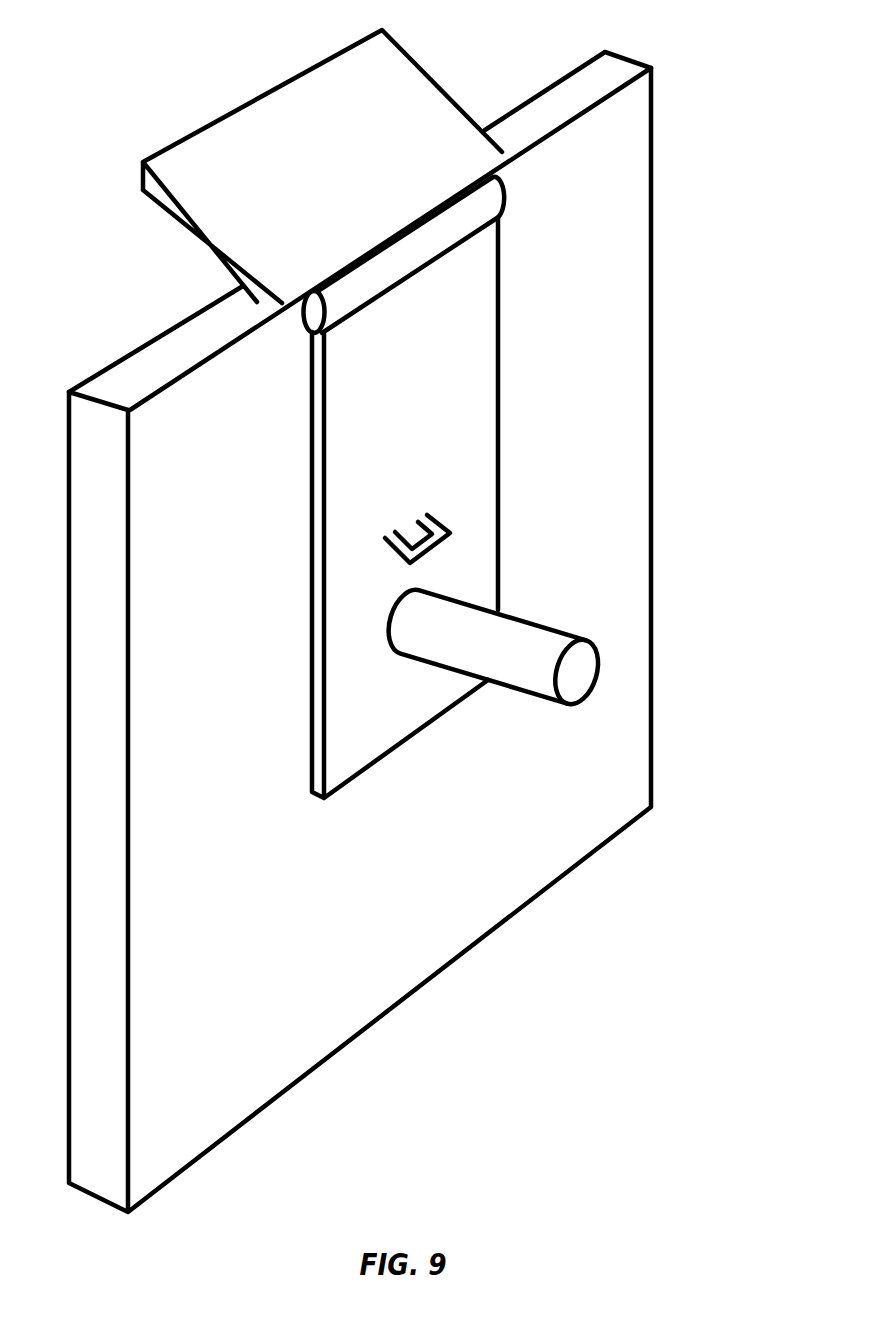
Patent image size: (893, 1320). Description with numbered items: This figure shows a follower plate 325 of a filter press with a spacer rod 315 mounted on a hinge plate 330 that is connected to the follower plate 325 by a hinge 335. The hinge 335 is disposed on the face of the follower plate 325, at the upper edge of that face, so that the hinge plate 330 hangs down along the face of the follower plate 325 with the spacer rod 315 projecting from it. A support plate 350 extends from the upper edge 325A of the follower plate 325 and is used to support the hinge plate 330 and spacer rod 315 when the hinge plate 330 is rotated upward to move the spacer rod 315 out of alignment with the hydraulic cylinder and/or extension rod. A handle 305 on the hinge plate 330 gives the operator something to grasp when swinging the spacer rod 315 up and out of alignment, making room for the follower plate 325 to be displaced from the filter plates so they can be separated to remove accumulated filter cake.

The handle 305 is at (450, 525).
The spacer rod 315 is at (537, 635).
The follower plate 325 is at (185, 488).
The upper edge of the follower plate 325A is at (167, 345).
The hinge plate 330 is at (375, 418).
The hinge 335 is at (363, 272).
The support plate 350 is at (327, 135).